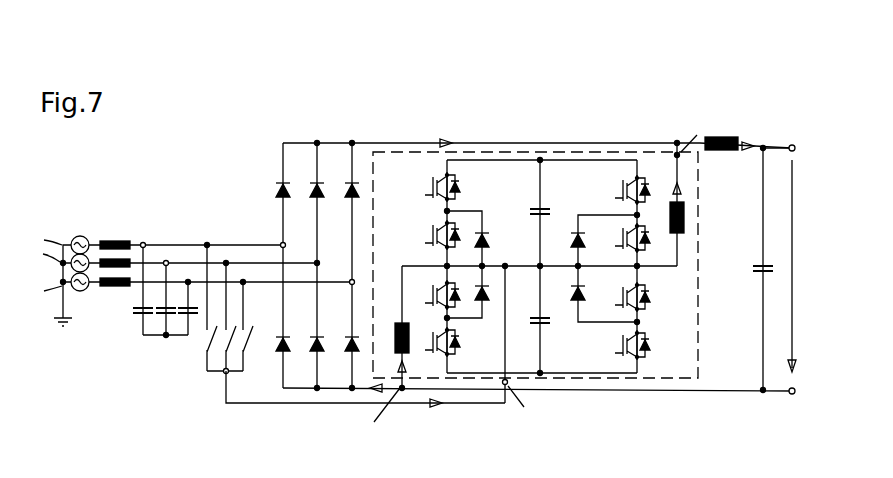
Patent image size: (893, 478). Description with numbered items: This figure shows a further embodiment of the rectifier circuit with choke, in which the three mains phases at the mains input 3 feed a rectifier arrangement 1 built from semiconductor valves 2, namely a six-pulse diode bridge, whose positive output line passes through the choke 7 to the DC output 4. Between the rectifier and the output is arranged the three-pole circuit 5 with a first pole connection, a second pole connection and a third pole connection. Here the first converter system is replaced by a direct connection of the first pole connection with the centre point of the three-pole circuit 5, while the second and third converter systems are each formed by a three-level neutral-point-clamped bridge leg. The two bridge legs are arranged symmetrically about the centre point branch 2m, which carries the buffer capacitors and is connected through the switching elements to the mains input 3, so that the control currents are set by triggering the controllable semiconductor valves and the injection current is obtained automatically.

The rectifier arrangement 1 is at (302, 245).
The semiconductor valve 2 is at (282, 191).
The mains input 3 is at (280, 218).
The DC output 4 is at (782, 120).
The three-pole circuit 5 is at (402, 152).
The choke 7 is at (733, 137).
The capacitor branch 2m is at (542, 193).